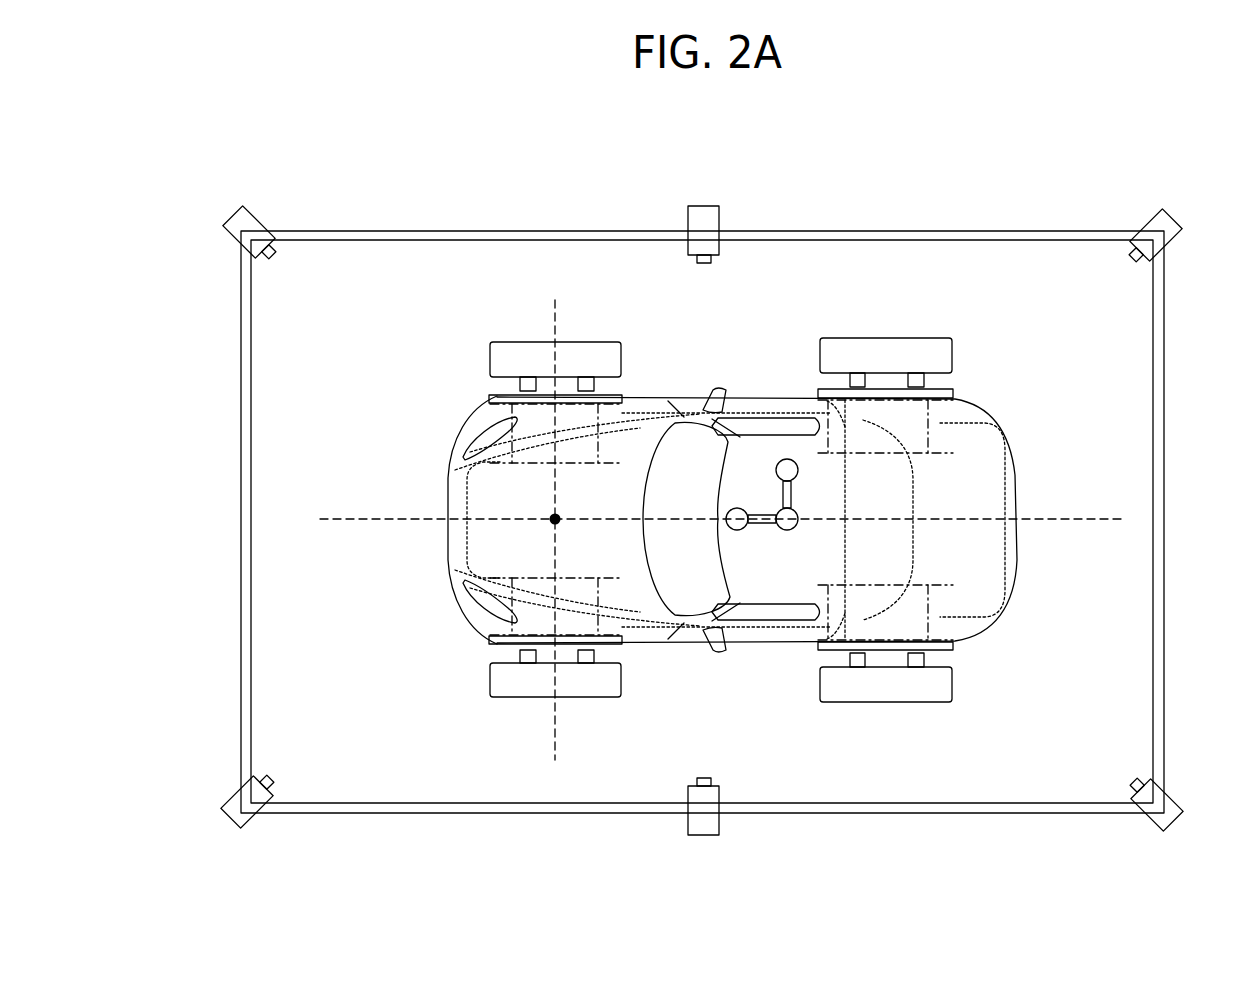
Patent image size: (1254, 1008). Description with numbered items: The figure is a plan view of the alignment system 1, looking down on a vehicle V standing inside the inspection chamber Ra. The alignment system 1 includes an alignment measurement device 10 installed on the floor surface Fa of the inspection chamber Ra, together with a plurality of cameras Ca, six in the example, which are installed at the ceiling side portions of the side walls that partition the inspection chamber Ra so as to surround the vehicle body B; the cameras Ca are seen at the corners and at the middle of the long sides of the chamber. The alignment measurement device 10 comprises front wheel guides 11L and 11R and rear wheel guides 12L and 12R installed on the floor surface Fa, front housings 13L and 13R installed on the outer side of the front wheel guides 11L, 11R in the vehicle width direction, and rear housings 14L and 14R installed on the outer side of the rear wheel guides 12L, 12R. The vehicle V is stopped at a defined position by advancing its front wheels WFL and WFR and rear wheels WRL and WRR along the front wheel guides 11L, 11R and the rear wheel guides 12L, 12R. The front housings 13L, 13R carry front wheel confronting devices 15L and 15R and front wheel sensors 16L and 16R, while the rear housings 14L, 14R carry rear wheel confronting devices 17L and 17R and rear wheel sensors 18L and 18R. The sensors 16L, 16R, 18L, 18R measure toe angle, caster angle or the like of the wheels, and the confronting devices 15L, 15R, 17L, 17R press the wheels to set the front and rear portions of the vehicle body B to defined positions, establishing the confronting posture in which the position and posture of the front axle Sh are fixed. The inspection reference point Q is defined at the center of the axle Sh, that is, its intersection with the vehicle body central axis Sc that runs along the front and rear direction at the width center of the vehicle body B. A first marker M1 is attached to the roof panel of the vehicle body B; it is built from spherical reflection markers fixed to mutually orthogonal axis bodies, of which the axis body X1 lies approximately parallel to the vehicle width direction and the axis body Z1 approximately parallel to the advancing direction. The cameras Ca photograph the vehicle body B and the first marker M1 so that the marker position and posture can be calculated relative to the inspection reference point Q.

The alignment system 1 is at (322, 152).
The cameras Ca is at (245, 218).
The inspection chamber Ra is at (808, 252).
The floor surface Fa is at (352, 300).
The alignment measurement device 10 is at (444, 306).
The axle Sh is at (555, 513).
The vehicle body central axis Sc is at (704, 520).
The front housing 13R is at (622, 276).
The front housing 13L is at (599, 728).
The rear housing 14R is at (975, 278).
The rear housing 14L is at (947, 728).
The front wheel confronting device 15R is at (520, 387).
The front wheel confronting device 15L is at (518, 656).
The front wheel sensor 16R is at (592, 386).
The front wheel sensor 16L is at (592, 656).
The rear wheel confronting device 17R is at (850, 381).
The rear wheel confronting device 17L is at (850, 658).
The rear wheel sensor 18R is at (925, 381).
The rear wheel sensor 18L is at (925, 658).
The front wheel guide 11R is at (492, 399).
The front wheel guide 11L is at (492, 640).
The rear wheel guide 12R is at (950, 394).
The rear wheel guide 12L is at (950, 648).
The front wheel WFR is at (495, 430).
The front wheel WFL is at (495, 610).
The rear wheel WRR is at (998, 430).
The rear wheel WRL is at (998, 610).
The vehicle V is at (1065, 581).
The vehicle body B is at (494, 546).
The inspection reference point Q is at (550, 518).
The axis body X1 is at (782, 488).
The axis body Z1 is at (768, 522).
The first marker M1 is at (830, 492).